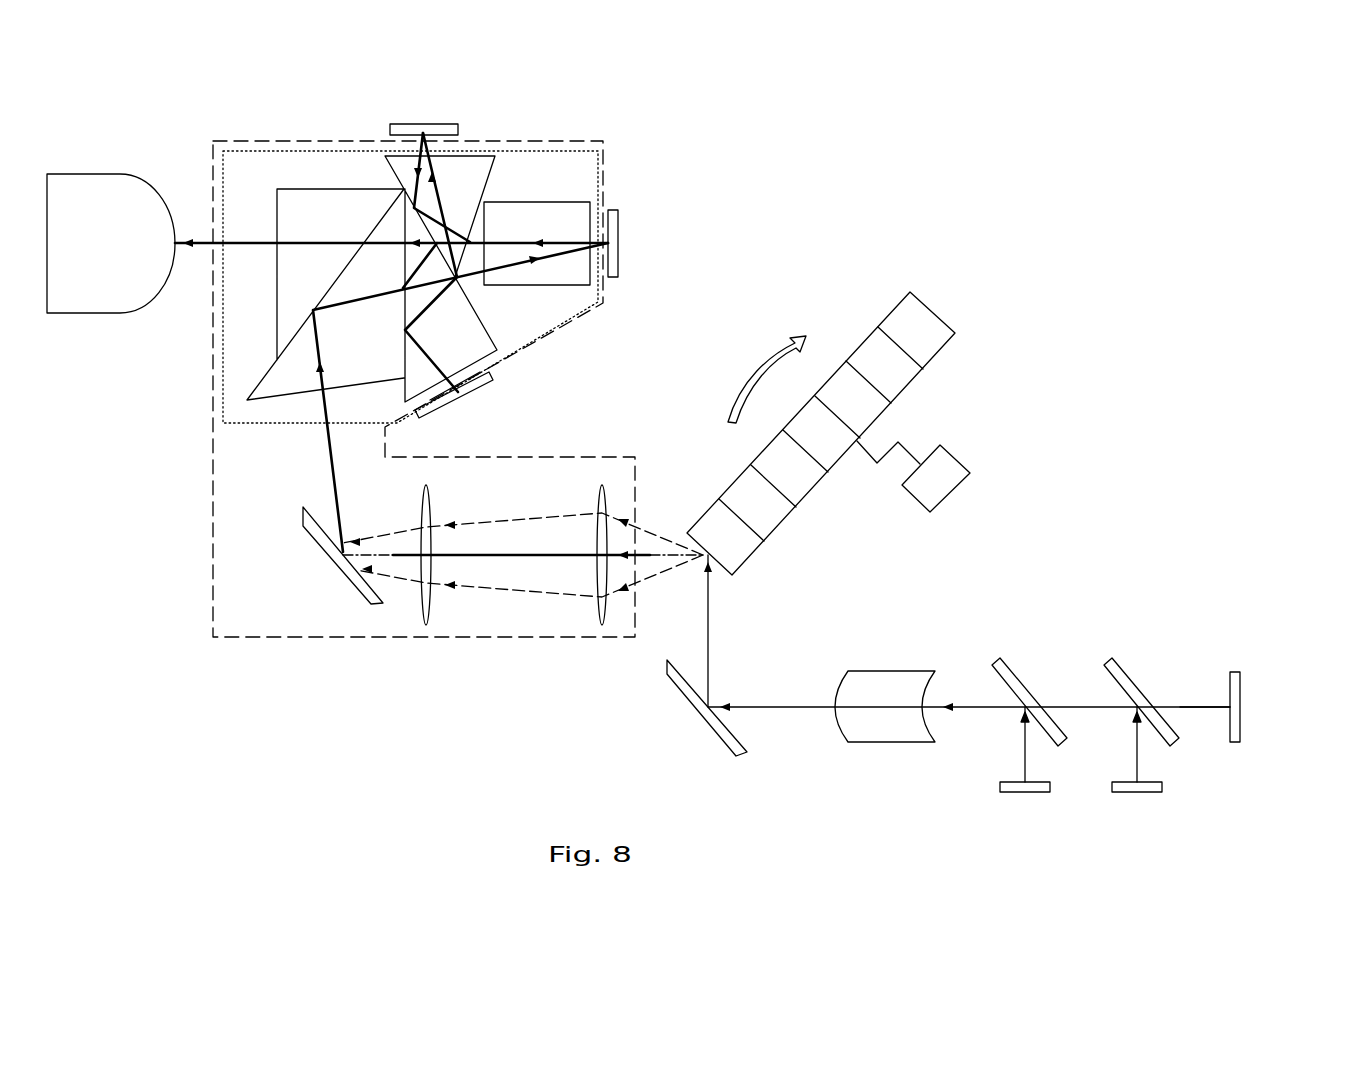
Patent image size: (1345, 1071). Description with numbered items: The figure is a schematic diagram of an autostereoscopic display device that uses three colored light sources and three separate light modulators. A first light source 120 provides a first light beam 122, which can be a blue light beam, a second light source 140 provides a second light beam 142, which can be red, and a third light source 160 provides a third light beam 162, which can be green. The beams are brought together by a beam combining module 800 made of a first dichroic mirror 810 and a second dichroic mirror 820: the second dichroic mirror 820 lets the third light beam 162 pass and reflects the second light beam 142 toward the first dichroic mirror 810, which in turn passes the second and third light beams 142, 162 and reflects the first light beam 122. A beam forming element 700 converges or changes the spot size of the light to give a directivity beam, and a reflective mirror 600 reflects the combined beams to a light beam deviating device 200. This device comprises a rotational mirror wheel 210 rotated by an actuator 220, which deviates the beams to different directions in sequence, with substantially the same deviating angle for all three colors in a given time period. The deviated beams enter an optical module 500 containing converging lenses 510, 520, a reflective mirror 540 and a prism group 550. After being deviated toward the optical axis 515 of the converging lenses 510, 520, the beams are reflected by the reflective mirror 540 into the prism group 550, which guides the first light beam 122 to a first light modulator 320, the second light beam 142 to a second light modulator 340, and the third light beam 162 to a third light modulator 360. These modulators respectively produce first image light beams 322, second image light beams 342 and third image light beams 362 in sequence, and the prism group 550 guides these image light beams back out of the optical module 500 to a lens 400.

The first light source 120 is at (1025, 785).
The first light beam 122 is at (1013, 754).
The second light source 140 is at (1137, 785).
The second light beam 142 is at (1125, 754).
The third light source 160 is at (1237, 707).
The third light beam 162 is at (1206, 716).
The light beam deviating device 200 is at (948, 433).
The rotational mirror wheel 210 is at (918, 327).
The actuator 220 is at (991, 476).
The first light modulator 320 is at (485, 387).
The first image light beams 322 is at (466, 378).
The second light modulator 340 is at (418, 124).
The second image light beams 342 is at (405, 143).
The third light modulator 360 is at (614, 220).
The third image light beams 362 is at (567, 228).
The lens 400 is at (92, 270).
The optical module 500 is at (511, 139).
The converging lens 510 is at (598, 608).
The optical axis 515 is at (498, 567).
The converging lens 520 is at (422, 608).
The reflective mirror 540 is at (355, 580).
The prism group 550 is at (245, 428).
The reflective mirror 600 is at (710, 722).
The beam forming element 700 is at (887, 722).
The beam combining module 800 is at (1085, 631).
The first dichroic mirror 810 is at (1007, 658).
The second dichroic mirror 820 is at (1141, 658).